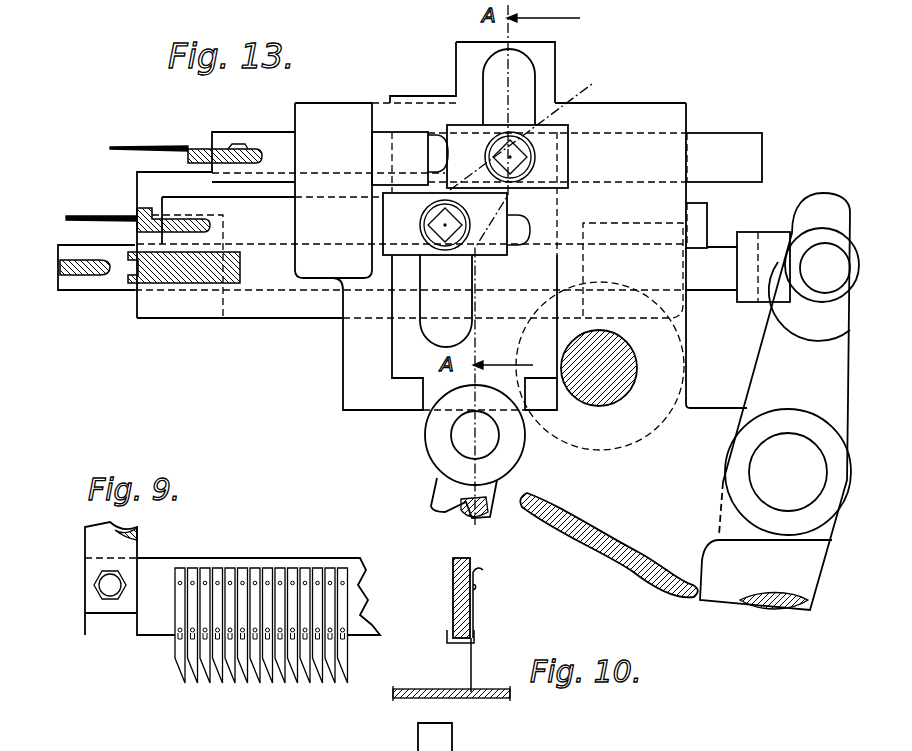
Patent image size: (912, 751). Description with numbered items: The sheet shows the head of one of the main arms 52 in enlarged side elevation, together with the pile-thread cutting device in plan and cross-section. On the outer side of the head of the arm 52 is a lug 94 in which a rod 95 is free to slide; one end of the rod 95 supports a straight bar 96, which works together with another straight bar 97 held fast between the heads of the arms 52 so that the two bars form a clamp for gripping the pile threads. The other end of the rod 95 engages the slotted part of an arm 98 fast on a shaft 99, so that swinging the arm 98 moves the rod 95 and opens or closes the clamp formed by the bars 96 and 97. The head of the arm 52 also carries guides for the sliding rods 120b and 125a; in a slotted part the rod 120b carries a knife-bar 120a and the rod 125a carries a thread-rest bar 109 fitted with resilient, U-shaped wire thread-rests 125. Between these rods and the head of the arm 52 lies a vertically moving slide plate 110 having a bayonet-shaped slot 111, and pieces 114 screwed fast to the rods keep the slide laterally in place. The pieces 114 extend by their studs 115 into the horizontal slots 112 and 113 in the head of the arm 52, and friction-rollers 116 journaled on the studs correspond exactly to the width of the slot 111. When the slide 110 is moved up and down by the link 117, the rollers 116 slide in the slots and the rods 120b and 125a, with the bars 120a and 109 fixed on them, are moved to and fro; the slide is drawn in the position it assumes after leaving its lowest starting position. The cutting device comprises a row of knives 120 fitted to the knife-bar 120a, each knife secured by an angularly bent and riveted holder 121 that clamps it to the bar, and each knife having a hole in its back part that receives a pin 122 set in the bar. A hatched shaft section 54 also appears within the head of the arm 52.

In FIG. 13, the main arm 52 is at (283, 312).
In FIG. 13, the shaft 54 is at (608, 387).
In FIG. 13, the lug 94 is at (224, 300).
In FIG. 13, the rod 95 is at (112, 285).
In FIG. 13, the straight bar 96 is at (91, 280).
In FIG. 13, the straight bar 97 is at (205, 262).
In FIG. 13, the arm 98 is at (762, 365).
In FIG. 13, the shaft 99 is at (789, 494).
In FIG. 13, the thread-rest bar 109 is at (140, 212).
In FIG. 13, the slide plate 110 is at (549, 49).
In FIG. 13, the bayonet-shaped slot 111 is at (500, 67).
In FIG. 13, the horizontal slot 112 is at (437, 145).
In FIG. 13, the horizontal slot 113 is at (522, 245).
In FIG. 13, the piece 114 is at (550, 152).
In FIG. 13, the stud 115 is at (539, 135).
In FIG. 13, the friction-roller 116 is at (510, 157).
In FIG. 13, the link 117 is at (440, 487).
In FIG. 13, the knife 120 is at (153, 149).
In FIG. 9, the knife 120 is at (302, 677).
In FIG. 10, the knife 120 is at (478, 668).
In FIG. 13, the knife-bar 120a is at (197, 149).
In FIG. 9, the knife-bar 120a is at (360, 602).
In FIG. 10, the knife-bar 120a is at (455, 595).
In FIG. 13, the sliding rod 120b is at (743, 147).
In FIG. 9, the sliding rod 120b is at (125, 550).
In FIG. 9, the holder 121 is at (204, 637).
In FIG. 10, the holder 121 is at (448, 640).
In FIG. 9, the pin 122 is at (232, 582).
In FIG. 10, the pin 122 is at (477, 588).
In FIG. 13, the thread-rest 125 is at (88, 224).
In FIG. 13, the sliding rod 125a is at (698, 225).